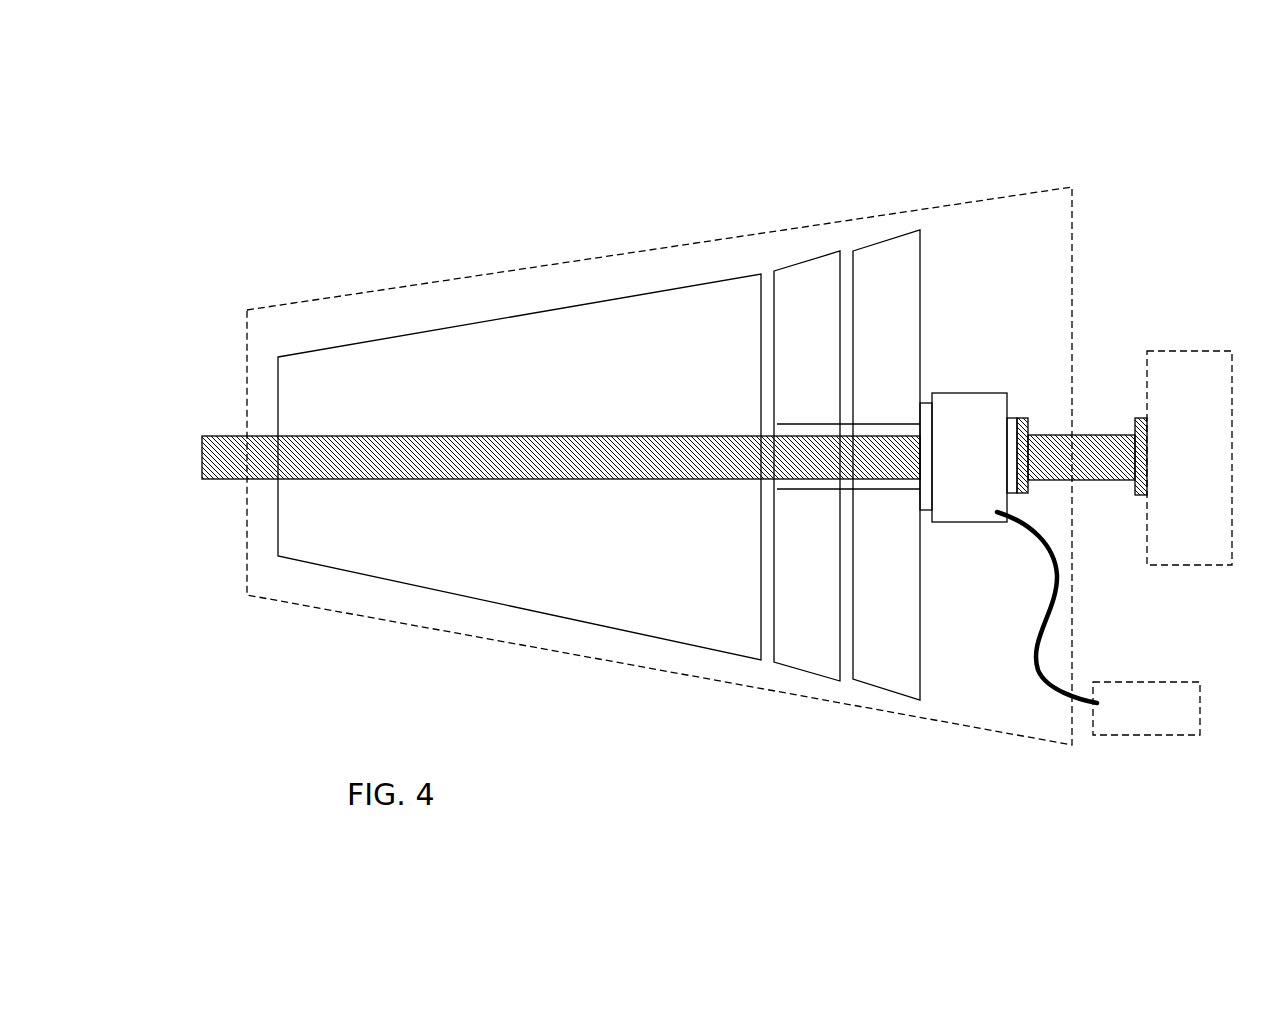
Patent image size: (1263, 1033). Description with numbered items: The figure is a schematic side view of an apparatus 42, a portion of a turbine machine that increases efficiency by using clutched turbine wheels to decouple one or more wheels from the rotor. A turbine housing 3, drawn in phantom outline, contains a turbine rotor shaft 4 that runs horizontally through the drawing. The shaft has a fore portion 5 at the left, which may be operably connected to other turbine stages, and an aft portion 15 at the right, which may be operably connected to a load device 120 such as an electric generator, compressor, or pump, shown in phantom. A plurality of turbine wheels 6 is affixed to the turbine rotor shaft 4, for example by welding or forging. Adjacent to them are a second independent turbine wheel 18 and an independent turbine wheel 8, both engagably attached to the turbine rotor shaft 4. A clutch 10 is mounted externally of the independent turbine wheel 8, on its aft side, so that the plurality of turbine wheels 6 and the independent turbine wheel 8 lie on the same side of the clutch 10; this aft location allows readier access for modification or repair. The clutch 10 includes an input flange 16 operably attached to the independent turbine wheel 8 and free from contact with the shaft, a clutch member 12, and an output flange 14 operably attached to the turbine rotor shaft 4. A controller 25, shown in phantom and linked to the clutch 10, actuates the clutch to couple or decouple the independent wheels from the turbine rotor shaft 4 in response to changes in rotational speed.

The apparatus 42 is at (394, 143).
The turbine housing 3 is at (648, 247).
The fore portion 5 is at (214, 423).
The turbine rotor shaft 4 is at (425, 458).
The plurality of turbine wheels 6 is at (577, 382).
The second independent turbine wheel 18 is at (817, 285).
The independent turbine wheel 8 is at (903, 285).
The clutch 10 is at (962, 375).
The input flange 16 is at (925, 528).
The clutch member 12 is at (983, 468).
The output flange 14 is at (1014, 408).
The aft portion 15 is at (1052, 505).
The load device 120 is at (1212, 469).
The controller 25 is at (1164, 729).